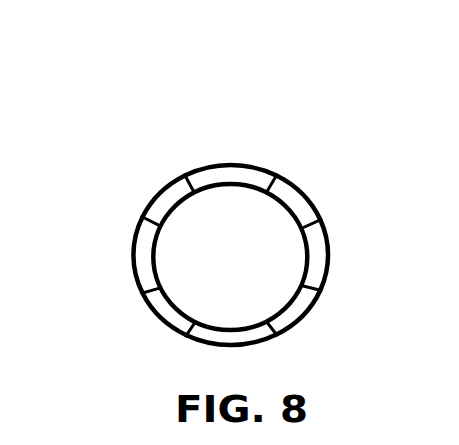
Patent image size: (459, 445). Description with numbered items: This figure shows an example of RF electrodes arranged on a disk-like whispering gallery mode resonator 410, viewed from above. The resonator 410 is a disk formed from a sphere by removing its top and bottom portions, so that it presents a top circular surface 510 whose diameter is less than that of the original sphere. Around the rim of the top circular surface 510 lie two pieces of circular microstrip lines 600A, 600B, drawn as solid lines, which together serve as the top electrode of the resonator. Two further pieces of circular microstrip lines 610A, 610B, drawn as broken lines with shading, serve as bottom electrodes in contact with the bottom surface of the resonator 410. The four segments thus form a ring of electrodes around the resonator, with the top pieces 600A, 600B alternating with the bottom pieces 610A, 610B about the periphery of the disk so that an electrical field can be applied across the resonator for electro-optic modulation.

The disk-like whispering gallery mode resonator 410 is at (112, 116).
The top circular surface 510 is at (254, 264).
The circular microstrip line 600A is at (307, 199).
The circular microstrip line 600B is at (233, 345).
The circular microstrip line 610A is at (158, 196).
The circular microstrip line 610B is at (300, 318).